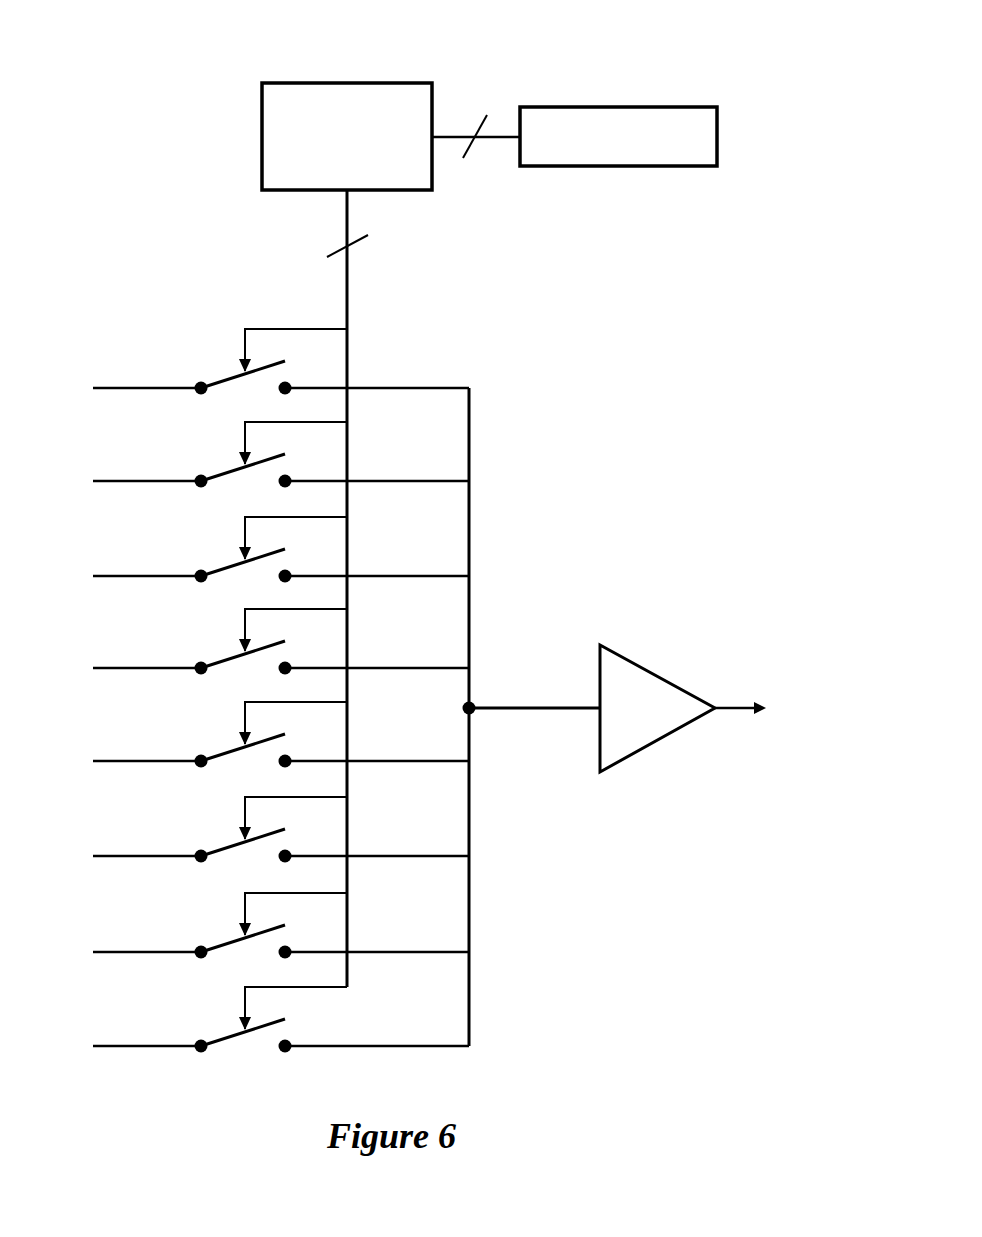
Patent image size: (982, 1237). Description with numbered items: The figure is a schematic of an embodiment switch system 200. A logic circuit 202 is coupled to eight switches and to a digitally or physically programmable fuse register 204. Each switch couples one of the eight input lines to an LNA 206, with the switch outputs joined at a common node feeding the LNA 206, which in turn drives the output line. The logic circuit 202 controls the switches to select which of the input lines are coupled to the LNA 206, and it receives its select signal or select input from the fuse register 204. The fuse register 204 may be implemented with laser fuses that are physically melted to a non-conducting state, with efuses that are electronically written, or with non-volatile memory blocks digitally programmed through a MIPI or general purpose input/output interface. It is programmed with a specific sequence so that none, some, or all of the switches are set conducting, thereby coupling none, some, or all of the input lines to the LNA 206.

The switch system 200 is at (120, 78).
The logic circuit 202 is at (348, 83).
The fuse register 204 is at (625, 107).
The LNA 206 is at (648, 668).